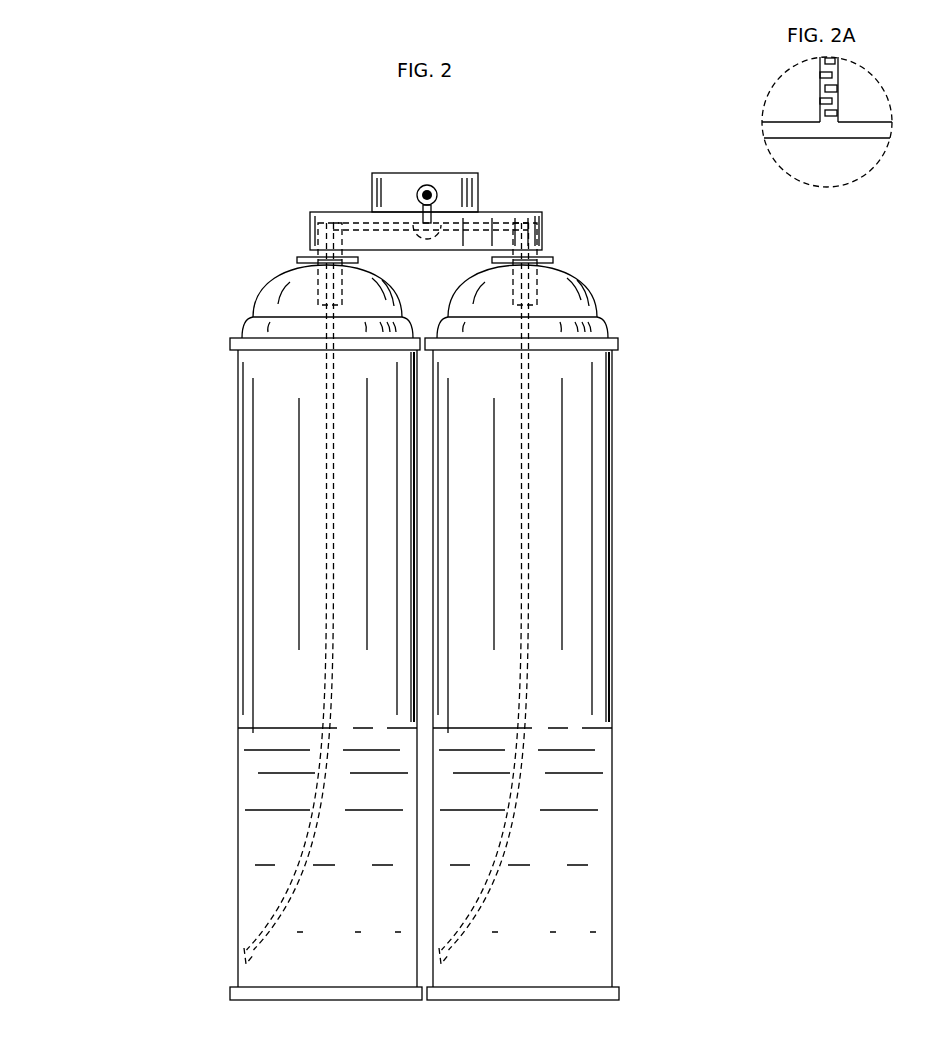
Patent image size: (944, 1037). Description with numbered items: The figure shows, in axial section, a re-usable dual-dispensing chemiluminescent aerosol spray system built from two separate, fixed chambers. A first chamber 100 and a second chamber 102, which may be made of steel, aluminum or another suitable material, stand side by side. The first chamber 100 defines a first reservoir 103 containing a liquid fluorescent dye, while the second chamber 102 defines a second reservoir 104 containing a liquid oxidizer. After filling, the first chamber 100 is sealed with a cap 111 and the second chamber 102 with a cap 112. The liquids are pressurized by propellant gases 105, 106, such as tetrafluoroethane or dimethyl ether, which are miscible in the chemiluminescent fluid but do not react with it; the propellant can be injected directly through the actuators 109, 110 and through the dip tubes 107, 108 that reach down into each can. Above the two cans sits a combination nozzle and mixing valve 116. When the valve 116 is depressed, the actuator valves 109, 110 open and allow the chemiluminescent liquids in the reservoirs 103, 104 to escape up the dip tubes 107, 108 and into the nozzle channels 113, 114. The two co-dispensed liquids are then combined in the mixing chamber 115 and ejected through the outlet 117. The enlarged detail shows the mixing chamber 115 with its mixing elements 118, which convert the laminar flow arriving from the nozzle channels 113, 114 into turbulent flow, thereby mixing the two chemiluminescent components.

In FIG. 2, the first chamber 100 is at (612, 477).
In FIG. 2, the second chamber 102 is at (237, 487).
In FIG. 2, the first reservoir 103 is at (587, 786).
In FIG. 2, the second reservoir 104 is at (275, 781).
In FIG. 2, the propellant gas 105 is at (580, 547).
In FIG. 2, the propellant gas 106 is at (272, 563).
In FIG. 2, the dip tube 107 is at (473, 923).
In FIG. 2, the dip tube 108 is at (250, 941).
In FIG. 2, the actuator valve 109 is at (585, 275).
In FIG. 2, the actuator valve 110 is at (313, 287).
In FIG. 2, the cap 111 is at (558, 258).
In FIG. 2, the cap 112 is at (297, 260).
In FIG. 2, the nozzle channel 113 is at (545, 217).
In FIG. 2, the nozzle channel 114 is at (307, 218).
In FIG. 2, the mixing chamber 115 is at (408, 220).
In FIG. 2A, the mixing chamber 115 is at (822, 118).
In FIG. 2, the combination nozzle and mixing valve 116 is at (478, 190).
In FIG. 2, the outlet 117 is at (424, 193).
In FIG. 2A, the mixing elements 118 is at (828, 88).